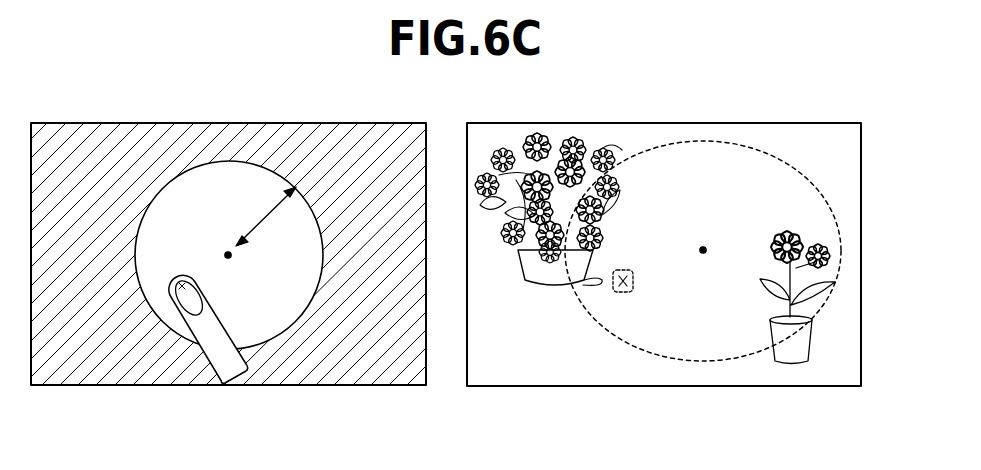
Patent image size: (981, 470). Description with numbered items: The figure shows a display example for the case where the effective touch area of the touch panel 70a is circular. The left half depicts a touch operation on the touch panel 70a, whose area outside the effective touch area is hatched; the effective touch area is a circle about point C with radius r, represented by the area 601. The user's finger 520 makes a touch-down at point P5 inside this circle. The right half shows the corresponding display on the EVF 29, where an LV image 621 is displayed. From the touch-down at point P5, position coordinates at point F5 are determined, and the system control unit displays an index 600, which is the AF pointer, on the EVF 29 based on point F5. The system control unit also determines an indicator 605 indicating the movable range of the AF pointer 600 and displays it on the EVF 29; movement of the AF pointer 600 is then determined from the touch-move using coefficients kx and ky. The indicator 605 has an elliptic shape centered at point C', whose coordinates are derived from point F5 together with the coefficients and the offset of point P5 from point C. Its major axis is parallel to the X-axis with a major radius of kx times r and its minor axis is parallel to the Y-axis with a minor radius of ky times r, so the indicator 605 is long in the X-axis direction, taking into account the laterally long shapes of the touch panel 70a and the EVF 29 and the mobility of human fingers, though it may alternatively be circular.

The touch panel 70a is at (127, 131).
The area 601 is at (267, 158).
The point C is at (221, 242).
The finger 520 is at (221, 334).
The point P5 is at (186, 281).
The EVF 29 is at (595, 123).
The LV image 621 is at (850, 186).
The indicator 605 is at (757, 148).
The point C' is at (704, 235).
The index 600 is at (634, 281).
The point F5 is at (623, 272).